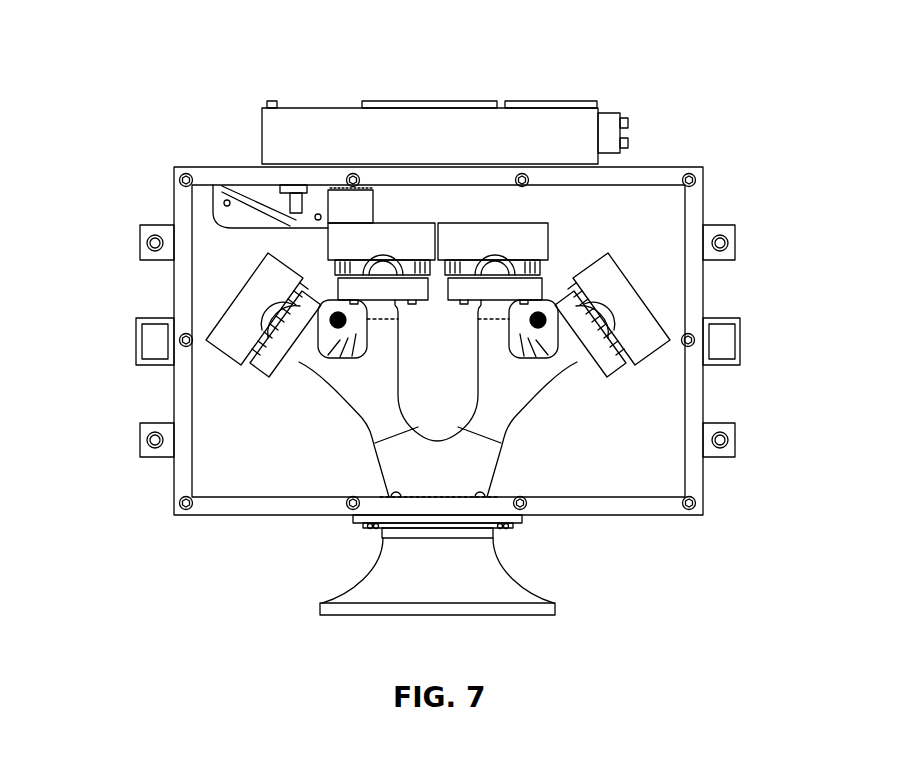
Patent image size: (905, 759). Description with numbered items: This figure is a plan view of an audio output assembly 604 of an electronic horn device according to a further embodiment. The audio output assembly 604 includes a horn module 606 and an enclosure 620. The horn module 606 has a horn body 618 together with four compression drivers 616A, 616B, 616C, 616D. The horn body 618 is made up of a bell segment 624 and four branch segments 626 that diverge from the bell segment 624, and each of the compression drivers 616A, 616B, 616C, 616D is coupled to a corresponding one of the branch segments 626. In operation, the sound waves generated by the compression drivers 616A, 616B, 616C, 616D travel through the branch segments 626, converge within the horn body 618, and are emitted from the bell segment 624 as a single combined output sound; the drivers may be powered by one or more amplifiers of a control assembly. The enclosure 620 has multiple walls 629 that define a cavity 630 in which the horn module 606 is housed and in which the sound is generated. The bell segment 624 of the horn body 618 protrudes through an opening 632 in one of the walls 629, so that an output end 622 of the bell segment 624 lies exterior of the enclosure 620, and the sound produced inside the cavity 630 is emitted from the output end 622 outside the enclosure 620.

The audio output assembly 604 is at (174, 98).
The horn module 606 is at (546, 433).
The compression driver 616A is at (246, 300).
The compression driver 616B is at (403, 222).
The compression driver 616C is at (500, 222).
The compression driver 616D is at (628, 300).
The horn body 618 is at (391, 460).
The enclosure 620 is at (640, 178).
The output end 622 is at (401, 634).
The bell segment 624 is at (488, 330).
The branch segment 626 is at (337, 377).
The wall 629 is at (693, 483).
The cavity 630 is at (668, 403).
The opening 632 is at (360, 532).